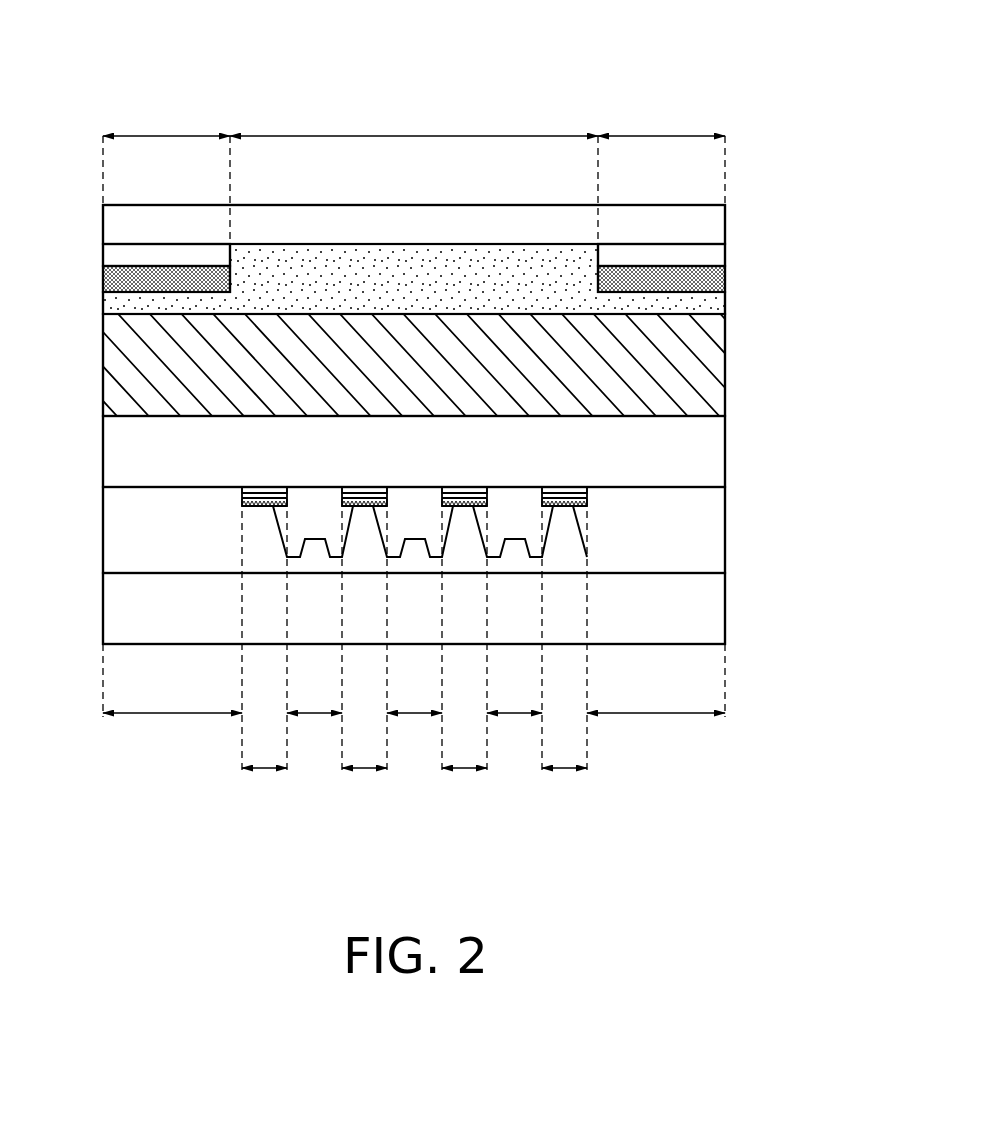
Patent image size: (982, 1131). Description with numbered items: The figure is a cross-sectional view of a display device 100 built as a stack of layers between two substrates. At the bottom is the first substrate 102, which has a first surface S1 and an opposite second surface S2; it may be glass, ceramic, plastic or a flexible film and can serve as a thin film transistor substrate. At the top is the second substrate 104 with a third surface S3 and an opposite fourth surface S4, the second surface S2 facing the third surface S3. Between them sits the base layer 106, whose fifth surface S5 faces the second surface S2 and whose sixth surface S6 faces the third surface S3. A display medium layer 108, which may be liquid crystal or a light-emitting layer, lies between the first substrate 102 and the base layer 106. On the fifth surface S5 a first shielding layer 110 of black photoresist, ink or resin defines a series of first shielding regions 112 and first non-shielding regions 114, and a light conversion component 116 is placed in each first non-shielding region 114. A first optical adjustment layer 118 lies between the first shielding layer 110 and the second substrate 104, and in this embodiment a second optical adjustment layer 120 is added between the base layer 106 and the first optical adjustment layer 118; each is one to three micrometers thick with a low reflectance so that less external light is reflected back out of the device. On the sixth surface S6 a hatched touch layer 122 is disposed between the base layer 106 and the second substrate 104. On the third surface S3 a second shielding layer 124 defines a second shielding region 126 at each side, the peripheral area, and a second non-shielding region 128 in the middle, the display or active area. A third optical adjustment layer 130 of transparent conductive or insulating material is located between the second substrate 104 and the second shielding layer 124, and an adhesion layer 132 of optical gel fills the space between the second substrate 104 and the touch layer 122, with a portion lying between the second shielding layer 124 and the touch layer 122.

The display device 100 is at (80, 48).
The first substrate 102 is at (710, 608).
The second substrate 104 is at (710, 226).
The base layer 106 is at (710, 434).
The display medium layer 108 is at (190, 512).
The first shielding layer 110 is at (578, 507).
The first shielding region 112 is at (414, 650).
The first non-shielding region 114 is at (414, 700).
The light conversion component 116 is at (518, 520).
The first optical adjustment layer 118 is at (577, 497).
The second optical adjustment layer 120 is at (578, 487).
The touch layer 122 is at (710, 365).
The second shielding layer 124 is at (710, 278).
The second shielding region 126 is at (414, 152).
The second non-shielding region 128 is at (414, 171).
The third optical adjustment layer 130 is at (710, 254).
The adhesion layer 132 is at (710, 303).
The first surface S1 is at (142, 645).
The second surface S2 is at (142, 572).
The third surface S3 is at (277, 246).
The fourth surface S4 is at (142, 205).
The fifth surface S5 is at (142, 488).
The sixth surface S6 is at (135, 412).